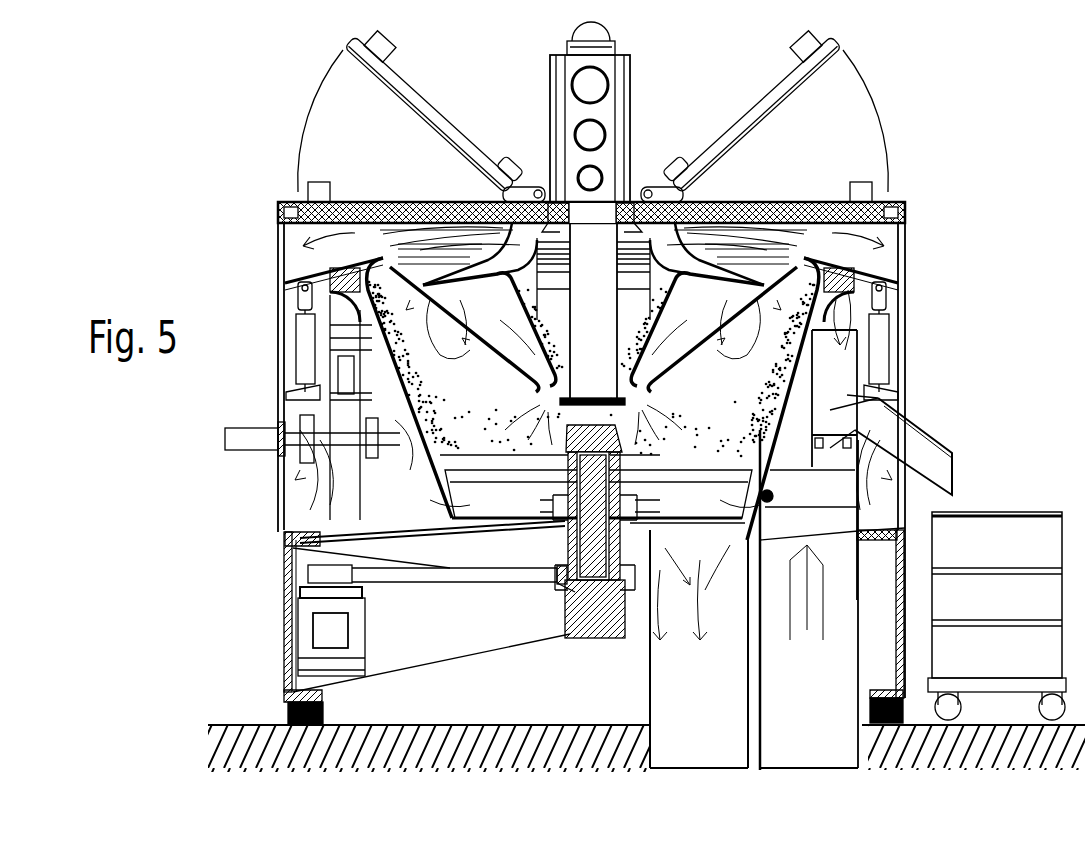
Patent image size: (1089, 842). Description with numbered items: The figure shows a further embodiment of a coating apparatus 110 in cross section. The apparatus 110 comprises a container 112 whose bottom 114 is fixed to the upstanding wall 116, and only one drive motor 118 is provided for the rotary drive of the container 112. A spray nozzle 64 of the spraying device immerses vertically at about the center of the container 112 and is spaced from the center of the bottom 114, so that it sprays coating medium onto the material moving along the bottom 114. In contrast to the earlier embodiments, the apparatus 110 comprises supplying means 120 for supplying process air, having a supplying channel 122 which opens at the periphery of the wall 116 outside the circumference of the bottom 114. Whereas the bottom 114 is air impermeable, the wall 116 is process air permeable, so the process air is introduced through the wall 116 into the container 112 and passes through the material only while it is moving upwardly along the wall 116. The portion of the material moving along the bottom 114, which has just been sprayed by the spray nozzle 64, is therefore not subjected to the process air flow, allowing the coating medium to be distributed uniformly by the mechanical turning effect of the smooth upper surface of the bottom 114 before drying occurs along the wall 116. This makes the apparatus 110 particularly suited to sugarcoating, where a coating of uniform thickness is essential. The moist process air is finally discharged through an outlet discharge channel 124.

The spray nozzle 64 is at (535, 401).
The apparatus 110 is at (632, 421).
The container 112 is at (910, 406).
The bottom 114 is at (666, 457).
The upstanding wall 116 is at (800, 376).
The drive motor 118 is at (330, 627).
The supplying means 120 is at (842, 770).
The supplying channel 122 is at (806, 748).
The outlet discharge channel 124 is at (693, 748).